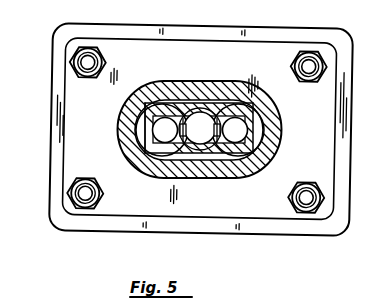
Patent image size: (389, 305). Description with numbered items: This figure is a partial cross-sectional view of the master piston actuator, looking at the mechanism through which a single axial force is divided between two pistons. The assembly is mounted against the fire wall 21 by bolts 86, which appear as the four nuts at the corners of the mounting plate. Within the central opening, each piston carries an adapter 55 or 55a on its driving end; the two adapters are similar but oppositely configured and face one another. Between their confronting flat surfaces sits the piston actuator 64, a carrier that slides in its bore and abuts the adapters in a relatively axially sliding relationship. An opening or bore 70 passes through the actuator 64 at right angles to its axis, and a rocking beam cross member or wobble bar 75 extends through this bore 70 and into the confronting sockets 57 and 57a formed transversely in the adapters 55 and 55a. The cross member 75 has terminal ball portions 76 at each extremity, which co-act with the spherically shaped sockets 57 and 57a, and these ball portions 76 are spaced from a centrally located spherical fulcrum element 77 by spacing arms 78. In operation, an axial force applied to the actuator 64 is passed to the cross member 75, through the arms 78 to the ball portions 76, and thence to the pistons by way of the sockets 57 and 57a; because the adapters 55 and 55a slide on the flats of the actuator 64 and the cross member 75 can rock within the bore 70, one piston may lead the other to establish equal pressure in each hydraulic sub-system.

The fire wall 21 is at (66, 218).
The bolts 86 is at (73, 62).
The adapter 55 is at (150, 96).
The adapter 55a is at (252, 100).
The opening or bore 70 is at (186, 104).
The piston actuator or carrier 64 is at (193, 98).
The rocking beam cross member or wobble bar 75 is at (222, 102).
The terminal ball portions 76 is at (120, 112).
The opening or socket 57 is at (257, 160).
The socket 57a is at (145, 160).
The spacing arms 78 is at (163, 168).
The spherical fulcrum element 77 is at (198, 162).